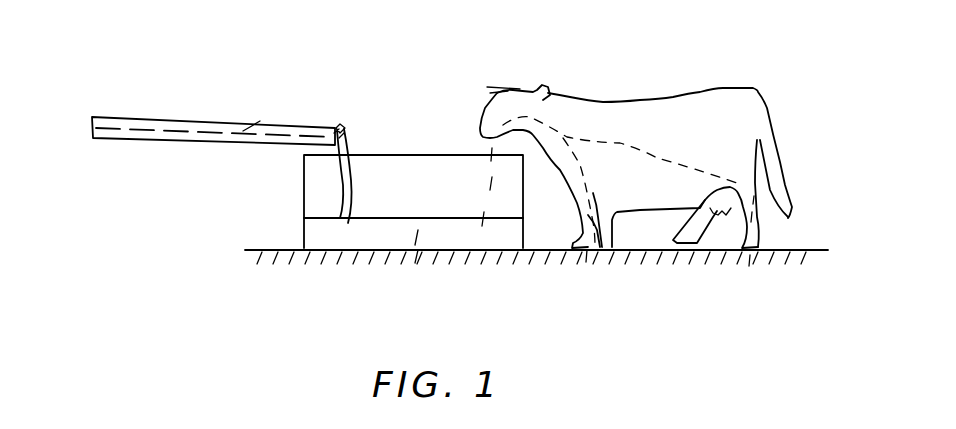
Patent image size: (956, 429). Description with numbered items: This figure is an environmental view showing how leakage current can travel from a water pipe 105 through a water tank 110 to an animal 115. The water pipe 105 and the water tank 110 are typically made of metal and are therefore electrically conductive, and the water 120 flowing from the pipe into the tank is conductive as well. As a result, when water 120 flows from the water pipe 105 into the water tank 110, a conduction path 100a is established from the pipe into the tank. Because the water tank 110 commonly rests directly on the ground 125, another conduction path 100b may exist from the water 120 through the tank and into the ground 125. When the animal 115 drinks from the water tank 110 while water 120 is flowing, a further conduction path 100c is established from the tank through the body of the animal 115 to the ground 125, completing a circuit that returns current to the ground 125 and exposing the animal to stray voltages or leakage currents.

The water pipe 105 is at (143, 118).
The conduction path 100a is at (243, 131).
The water tank 110 is at (416, 155).
The water 120 is at (345, 139).
The ground 125 is at (810, 252).
The conduction path 100b is at (411, 271).
The conduction path 100c is at (710, 168).
The animal 115 is at (630, 98).